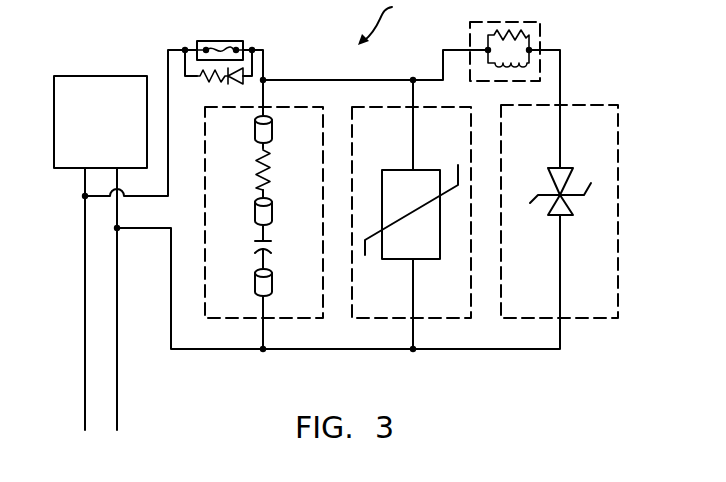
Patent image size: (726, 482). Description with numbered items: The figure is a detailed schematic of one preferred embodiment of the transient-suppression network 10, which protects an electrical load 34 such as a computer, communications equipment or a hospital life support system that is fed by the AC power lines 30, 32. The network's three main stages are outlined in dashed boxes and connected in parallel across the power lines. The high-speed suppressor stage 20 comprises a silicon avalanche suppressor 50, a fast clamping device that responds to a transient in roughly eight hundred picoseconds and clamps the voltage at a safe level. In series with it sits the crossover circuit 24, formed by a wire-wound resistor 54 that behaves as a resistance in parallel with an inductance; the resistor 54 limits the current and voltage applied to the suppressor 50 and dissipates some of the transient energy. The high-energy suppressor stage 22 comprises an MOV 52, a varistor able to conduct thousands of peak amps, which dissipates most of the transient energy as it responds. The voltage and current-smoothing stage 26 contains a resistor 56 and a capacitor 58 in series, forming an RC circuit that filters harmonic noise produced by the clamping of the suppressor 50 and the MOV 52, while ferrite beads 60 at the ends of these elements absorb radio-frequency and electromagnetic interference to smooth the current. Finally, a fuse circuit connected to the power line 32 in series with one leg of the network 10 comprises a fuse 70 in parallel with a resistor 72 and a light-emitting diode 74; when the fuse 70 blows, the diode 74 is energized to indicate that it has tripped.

The transient-suppression network 10 is at (387, 22).
The high-speed suppressor stage 20 is at (592, 104).
The high-energy suppressor stage 22 is at (443, 105).
The crossover circuit 24 is at (513, 21).
The voltage and current-smoothing stage 26 is at (293, 104).
The AC power line 30 is at (117, 278).
The AC power line 32 is at (85, 264).
The electrical load 34 is at (85, 76).
The silicon avalanche suppressor 50 is at (566, 216).
The MOV 52 is at (425, 260).
The wire-wound resistor 54 is at (533, 44).
The resistor 56 is at (271, 165).
The capacitor 58 is at (271, 249).
The ferrite beads 60 is at (274, 130).
The fuse 70 is at (218, 41).
The resistor 72 is at (205, 81).
The light-emitting diode 74 is at (235, 82).